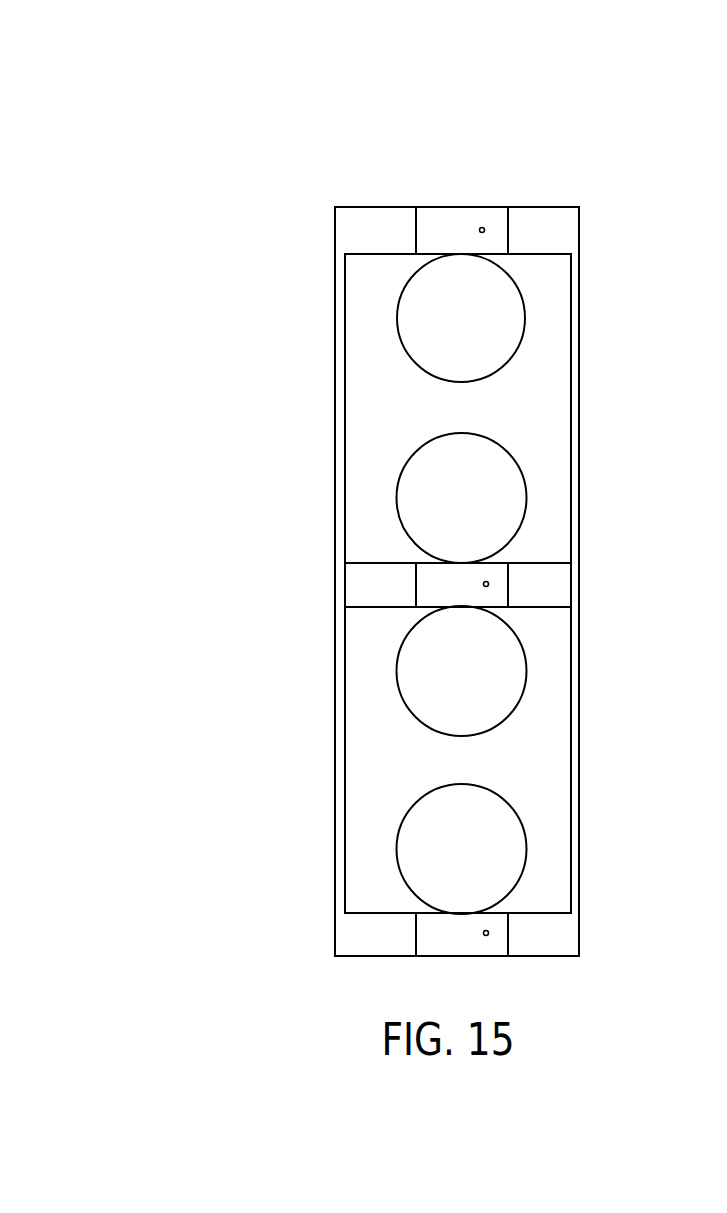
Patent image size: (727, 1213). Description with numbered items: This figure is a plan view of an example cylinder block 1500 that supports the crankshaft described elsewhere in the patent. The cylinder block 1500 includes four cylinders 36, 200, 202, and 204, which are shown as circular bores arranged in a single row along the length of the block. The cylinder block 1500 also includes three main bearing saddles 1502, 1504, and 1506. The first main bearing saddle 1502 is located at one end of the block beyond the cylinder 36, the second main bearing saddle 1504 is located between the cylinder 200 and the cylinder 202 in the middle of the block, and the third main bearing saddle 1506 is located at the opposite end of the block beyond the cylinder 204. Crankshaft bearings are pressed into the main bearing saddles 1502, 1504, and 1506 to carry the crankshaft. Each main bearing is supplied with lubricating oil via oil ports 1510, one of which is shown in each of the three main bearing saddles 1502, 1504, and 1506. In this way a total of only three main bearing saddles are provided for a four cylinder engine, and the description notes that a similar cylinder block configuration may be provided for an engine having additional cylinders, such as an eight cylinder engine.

The cylinder block 1500 is at (139, 56).
The main bearing saddle 1502 is at (457, 227).
The main bearing saddle 1504 is at (435, 588).
The main bearing saddle 1506 is at (443, 937).
The oil port 1510 is at (485, 227).
The cylinder 36 is at (448, 329).
The cylinder 200 is at (441, 512).
The cylinder 202 is at (441, 683).
The cylinder 204 is at (441, 862).